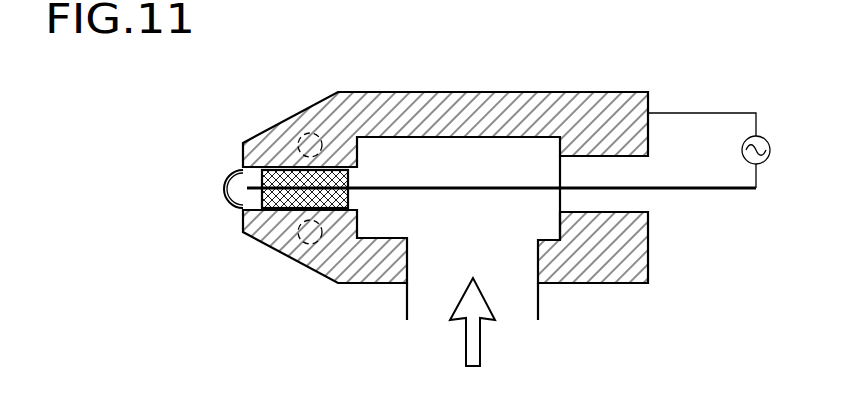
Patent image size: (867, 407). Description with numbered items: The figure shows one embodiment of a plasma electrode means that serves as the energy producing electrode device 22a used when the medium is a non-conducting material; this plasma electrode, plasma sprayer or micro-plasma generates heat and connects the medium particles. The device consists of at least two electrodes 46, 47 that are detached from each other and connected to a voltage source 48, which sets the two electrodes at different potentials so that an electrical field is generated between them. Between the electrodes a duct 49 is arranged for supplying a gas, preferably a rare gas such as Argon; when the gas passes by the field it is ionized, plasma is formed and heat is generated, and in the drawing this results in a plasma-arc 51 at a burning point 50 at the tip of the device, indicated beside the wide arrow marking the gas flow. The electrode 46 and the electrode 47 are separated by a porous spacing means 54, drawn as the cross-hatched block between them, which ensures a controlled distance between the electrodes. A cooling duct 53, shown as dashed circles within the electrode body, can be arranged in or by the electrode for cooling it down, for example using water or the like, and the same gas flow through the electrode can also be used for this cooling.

The electrode device 22a is at (235, 262).
The electrode 46 is at (427, 98).
The electrode 47 is at (690, 192).
The voltage source 48 is at (768, 143).
The duct 49 is at (432, 284).
The burning point 50 is at (217, 165).
The plasma-arc 51 is at (223, 185).
The cooling duct 53 is at (300, 244).
The spacing means 54 is at (287, 177).